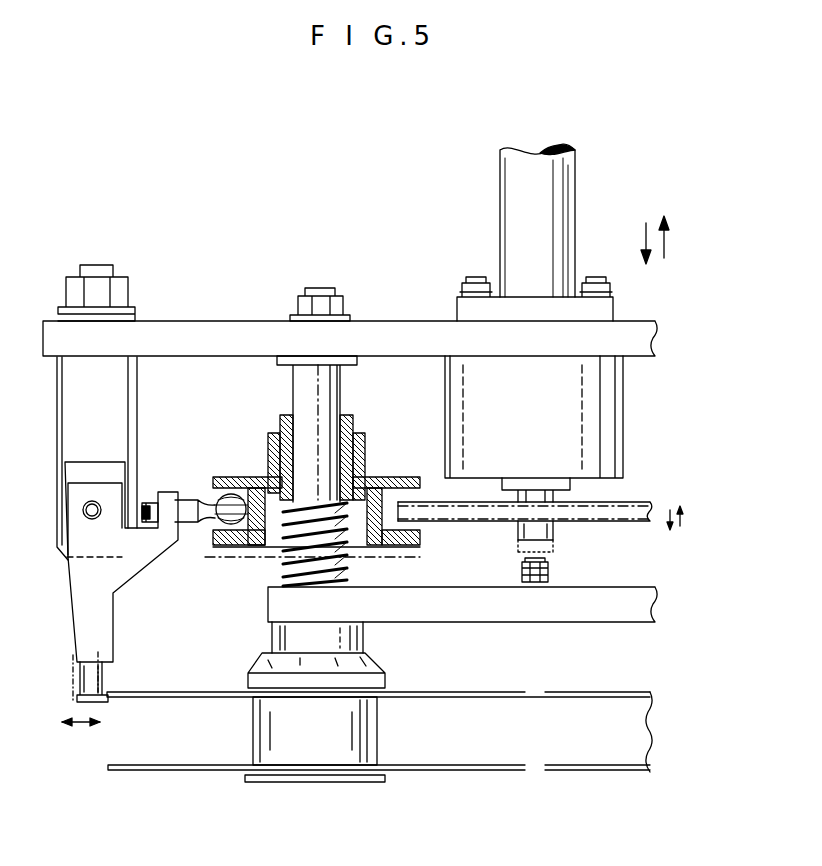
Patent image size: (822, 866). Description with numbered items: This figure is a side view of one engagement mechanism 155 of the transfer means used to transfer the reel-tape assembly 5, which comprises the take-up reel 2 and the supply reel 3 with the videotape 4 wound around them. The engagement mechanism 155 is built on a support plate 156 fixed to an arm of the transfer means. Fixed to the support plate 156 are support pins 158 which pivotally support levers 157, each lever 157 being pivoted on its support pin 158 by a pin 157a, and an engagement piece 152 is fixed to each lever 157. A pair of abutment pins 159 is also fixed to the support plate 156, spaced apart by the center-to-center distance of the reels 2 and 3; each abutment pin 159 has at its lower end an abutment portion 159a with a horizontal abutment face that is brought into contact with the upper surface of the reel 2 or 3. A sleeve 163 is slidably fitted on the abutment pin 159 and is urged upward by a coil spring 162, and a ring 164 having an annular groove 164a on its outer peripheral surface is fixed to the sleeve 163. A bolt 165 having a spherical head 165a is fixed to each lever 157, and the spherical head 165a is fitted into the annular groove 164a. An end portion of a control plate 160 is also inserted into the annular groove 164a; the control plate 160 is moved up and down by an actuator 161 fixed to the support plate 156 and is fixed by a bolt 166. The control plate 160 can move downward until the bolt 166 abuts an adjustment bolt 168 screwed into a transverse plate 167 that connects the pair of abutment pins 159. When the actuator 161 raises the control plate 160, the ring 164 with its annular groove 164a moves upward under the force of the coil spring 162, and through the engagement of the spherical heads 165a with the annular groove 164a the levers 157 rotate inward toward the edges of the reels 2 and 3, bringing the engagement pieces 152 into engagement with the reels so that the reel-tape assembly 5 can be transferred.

The reel 2 is at (178, 775).
The reel 3 is at (587, 773).
The videotape 4 is at (540, 745).
The reel-tape assembly 5 is at (452, 777).
The engagement piece 152 is at (102, 673).
The engagement mechanism 155 is at (283, 237).
The support plate 156 is at (408, 323).
The lever 157 is at (97, 597).
The pin 157a is at (93, 519).
The support pin 158 is at (108, 397).
The abutment pin 159 is at (302, 390).
The abutment portion 159a is at (260, 660).
The control plate 160 is at (637, 500).
The actuator 161 is at (600, 398).
The coil spring 162 is at (347, 568).
The sleeve 163 is at (353, 422).
The ring 164 is at (405, 475).
The annular groove 164a is at (420, 500).
The bolt 165 is at (192, 498).
The spherical head 165a is at (240, 476).
The bolt 166 is at (530, 530).
The transverse plate 167 is at (600, 612).
The adjustment bolt 168 is at (557, 567).